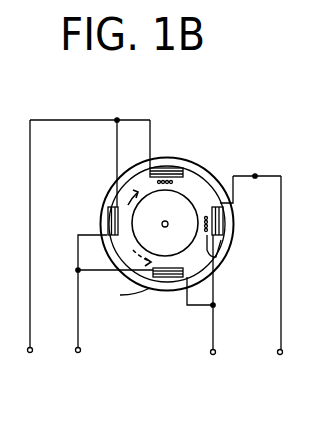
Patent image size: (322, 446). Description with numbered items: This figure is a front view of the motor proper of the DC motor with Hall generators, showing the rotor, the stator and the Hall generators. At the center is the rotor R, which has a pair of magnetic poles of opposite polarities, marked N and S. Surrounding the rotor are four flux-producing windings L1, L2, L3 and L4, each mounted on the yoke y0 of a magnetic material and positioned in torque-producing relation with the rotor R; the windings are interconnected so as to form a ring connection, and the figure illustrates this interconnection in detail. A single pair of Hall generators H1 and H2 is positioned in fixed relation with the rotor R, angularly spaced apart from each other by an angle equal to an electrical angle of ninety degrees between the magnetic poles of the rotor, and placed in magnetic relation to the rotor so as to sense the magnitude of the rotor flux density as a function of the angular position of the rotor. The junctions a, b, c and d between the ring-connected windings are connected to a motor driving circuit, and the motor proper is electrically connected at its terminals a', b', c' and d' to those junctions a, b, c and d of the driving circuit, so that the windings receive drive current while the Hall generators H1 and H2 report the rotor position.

The rotor R is at (181, 206).
The flux-producing winding L1 is at (161, 167).
The flux-producing winding L2 is at (224, 224).
The flux-producing winding L3 is at (167, 277).
The flux-producing winding L4 is at (107, 218).
The Hall generator H1 is at (176, 185).
The Hall generator H2 is at (214, 259).
The junction a is at (90, 143).
The junction b is at (250, 173).
The junction c is at (217, 275).
The junction d is at (99, 259).
The terminal a' is at (31, 254).
The terminal b' is at (279, 282).
The terminal c' is at (215, 346).
The terminal d' is at (79, 329).
The yoke y0 is at (135, 284).